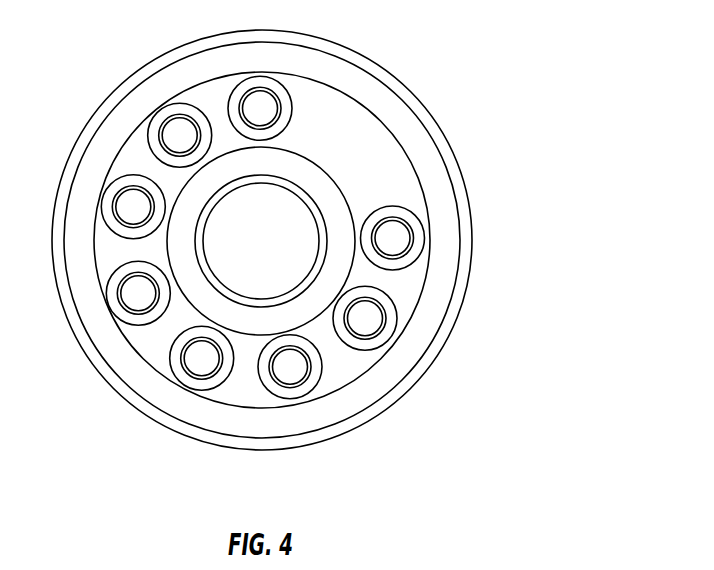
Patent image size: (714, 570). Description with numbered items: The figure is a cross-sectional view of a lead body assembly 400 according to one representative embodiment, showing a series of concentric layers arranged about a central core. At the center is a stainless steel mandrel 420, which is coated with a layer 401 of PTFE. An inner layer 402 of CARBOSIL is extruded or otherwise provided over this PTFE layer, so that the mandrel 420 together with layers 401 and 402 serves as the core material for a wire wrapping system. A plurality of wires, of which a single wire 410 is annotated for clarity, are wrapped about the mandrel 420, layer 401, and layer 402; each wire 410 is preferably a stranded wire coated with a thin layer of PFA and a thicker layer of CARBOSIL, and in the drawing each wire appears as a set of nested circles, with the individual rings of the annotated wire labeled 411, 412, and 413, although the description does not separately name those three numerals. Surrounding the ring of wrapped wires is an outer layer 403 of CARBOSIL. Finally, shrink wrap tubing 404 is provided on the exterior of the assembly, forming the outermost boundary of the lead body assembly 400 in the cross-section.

The lead body assembly 400 is at (492, 67).
The layer of PTFE 401 is at (320, 205).
The inner layer of CARBOSIL 402 is at (292, 150).
The outer layer of CARBOSIL 403 is at (447, 305).
The shrink wrap tubing 404 is at (472, 232).
The wire 410 is at (222, 395).
The bolt hole 411 is at (203, 360).
The bolt hole outer ring 412 is at (175, 363).
The bolt hole inner ring 413 is at (200, 392).
The stainless steel mandrel 420 is at (278, 252).